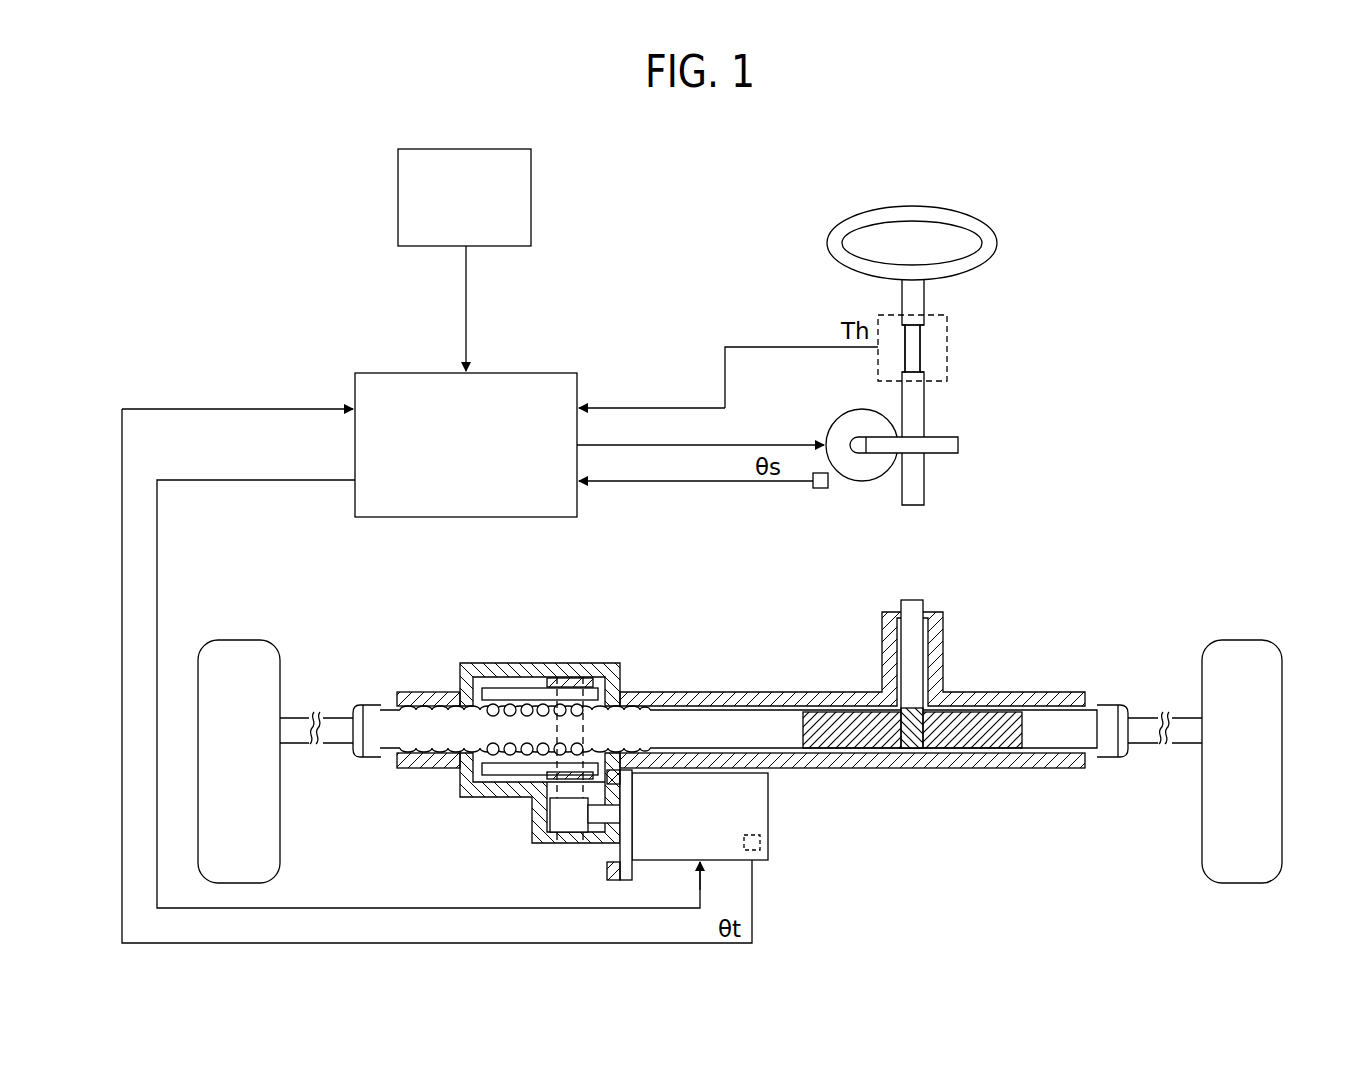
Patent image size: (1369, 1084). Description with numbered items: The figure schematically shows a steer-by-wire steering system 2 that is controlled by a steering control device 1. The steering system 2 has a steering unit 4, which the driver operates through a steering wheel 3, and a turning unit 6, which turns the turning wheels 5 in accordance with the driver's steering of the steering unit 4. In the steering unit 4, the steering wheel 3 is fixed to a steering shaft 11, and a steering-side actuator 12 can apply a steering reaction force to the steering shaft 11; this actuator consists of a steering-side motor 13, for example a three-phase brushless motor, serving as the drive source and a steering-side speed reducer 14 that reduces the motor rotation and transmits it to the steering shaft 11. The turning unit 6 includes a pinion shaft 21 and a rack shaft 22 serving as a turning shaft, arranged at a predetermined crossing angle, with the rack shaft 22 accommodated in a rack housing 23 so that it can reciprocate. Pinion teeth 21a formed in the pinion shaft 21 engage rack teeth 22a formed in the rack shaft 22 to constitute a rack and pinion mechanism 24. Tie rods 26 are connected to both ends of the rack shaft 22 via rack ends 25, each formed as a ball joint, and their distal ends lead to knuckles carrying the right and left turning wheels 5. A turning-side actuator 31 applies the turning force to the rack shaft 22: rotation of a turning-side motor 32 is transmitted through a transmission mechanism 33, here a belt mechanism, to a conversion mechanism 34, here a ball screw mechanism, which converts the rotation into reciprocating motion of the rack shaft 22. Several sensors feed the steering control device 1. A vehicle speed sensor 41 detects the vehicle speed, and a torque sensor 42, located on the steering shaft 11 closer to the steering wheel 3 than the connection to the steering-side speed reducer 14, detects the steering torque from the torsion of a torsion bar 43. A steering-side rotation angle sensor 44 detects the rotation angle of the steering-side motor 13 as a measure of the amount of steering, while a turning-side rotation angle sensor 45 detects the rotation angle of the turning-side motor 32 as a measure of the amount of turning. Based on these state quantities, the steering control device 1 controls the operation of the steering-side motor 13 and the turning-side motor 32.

The steering control device 1 is at (533, 372).
The steering system 2 is at (150, 243).
The steering wheel 3 is at (963, 213).
The steering unit 4 is at (1042, 427).
The turning wheels 5 is at (233, 640).
The turning unit 6 is at (1050, 533).
The steering shaft 11 is at (925, 402).
The steering-side actuator 12 is at (868, 448).
The steering-side motor 13 is at (862, 409).
The steering-side speed reducer 14 is at (876, 464).
The pinion shaft 21 is at (927, 631).
The pinion teeth 21a is at (912, 748).
The rack shaft 22 is at (672, 708).
The rack teeth 22a is at (867, 742).
The rack housing 23 is at (738, 692).
The rack and pinion mechanism 24 is at (948, 766).
The rack ends 25 is at (360, 707).
The tie rods 26 is at (297, 723).
The turning-side actuator 31 is at (616, 783).
The turning-side motor 32 is at (768, 800).
The transmission mechanism 33 is at (551, 834).
The conversion mechanism 34 is at (486, 786).
The vehicle speed sensor 41 is at (533, 197).
The torque sensor 42 is at (947, 311).
The torsion bar 43 is at (921, 355).
The steering-side rotation angle sensor 44 is at (820, 489).
The turning-side rotation angle sensor 45 is at (761, 841).